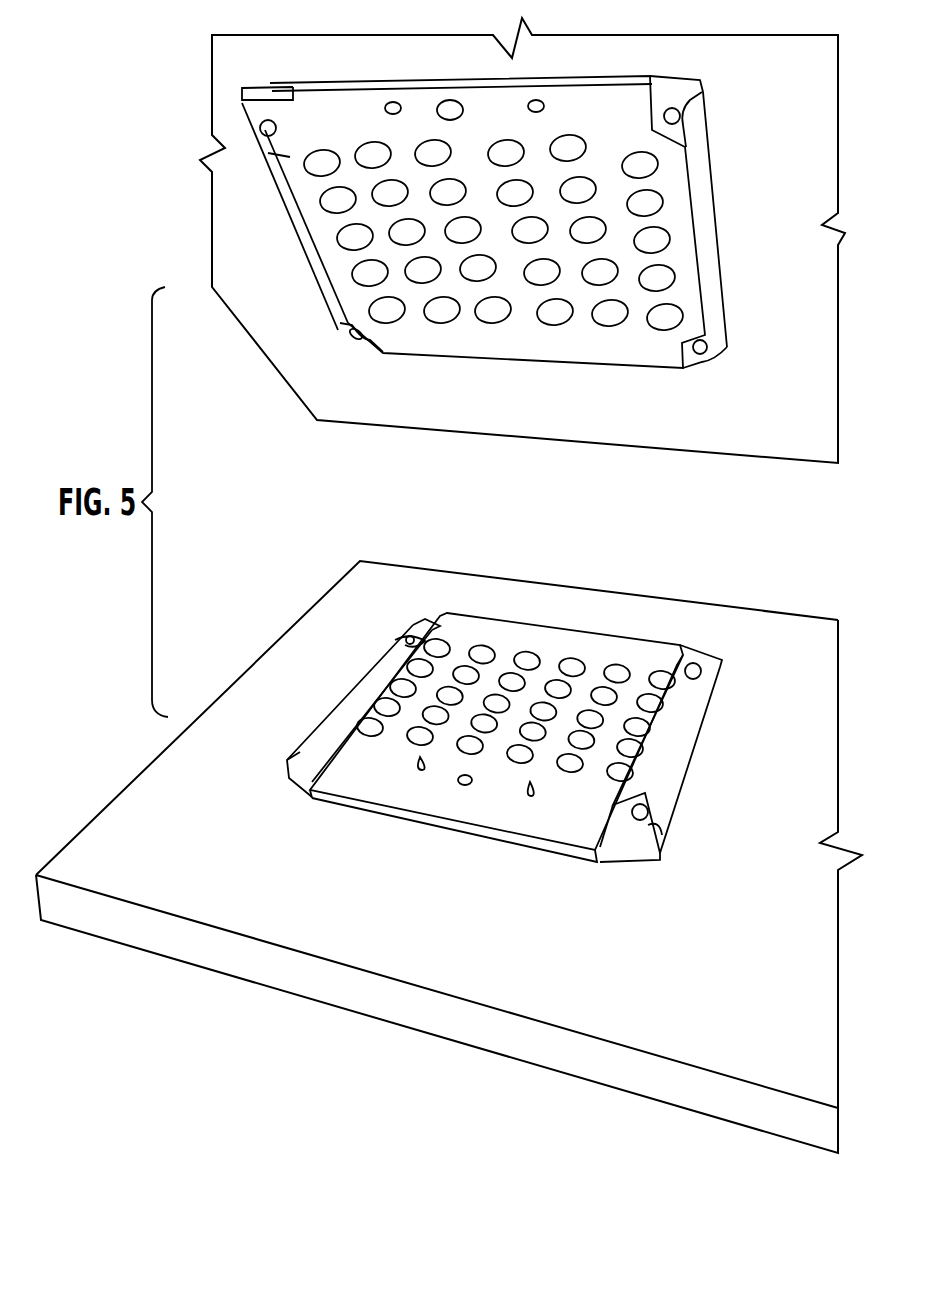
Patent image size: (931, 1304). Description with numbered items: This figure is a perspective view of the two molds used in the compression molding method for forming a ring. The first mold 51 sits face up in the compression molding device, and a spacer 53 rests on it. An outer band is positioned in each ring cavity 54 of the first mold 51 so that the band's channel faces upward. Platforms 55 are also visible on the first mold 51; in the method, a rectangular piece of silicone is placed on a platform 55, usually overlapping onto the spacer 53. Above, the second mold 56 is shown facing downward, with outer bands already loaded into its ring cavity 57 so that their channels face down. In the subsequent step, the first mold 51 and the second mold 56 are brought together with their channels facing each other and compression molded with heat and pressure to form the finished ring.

The first mold 51 is at (647, 853).
The spacer 53 is at (500, 813).
The ring cavity 54 is at (340, 244).
The platform 55 is at (370, 273).
The second mold 56 is at (284, 157).
The ring cavity 57 is at (375, 730).